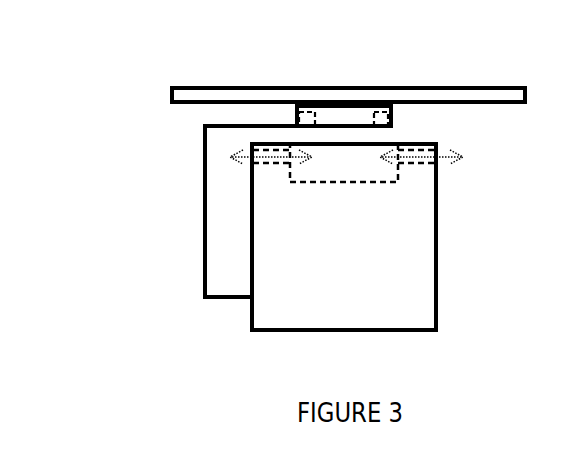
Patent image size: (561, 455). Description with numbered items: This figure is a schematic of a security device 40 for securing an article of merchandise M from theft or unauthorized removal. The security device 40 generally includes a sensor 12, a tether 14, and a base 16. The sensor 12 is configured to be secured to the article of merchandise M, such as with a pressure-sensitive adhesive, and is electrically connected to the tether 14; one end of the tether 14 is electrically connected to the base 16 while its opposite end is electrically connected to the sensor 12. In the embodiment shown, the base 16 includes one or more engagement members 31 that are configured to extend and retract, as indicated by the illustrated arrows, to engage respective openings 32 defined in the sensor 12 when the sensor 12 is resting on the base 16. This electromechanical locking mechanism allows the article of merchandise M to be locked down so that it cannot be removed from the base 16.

The security device 40 is at (136, 116).
The article of merchandise M is at (445, 88).
The sensor 12 is at (393, 127).
The tether 14 is at (205, 207).
The base 16 is at (440, 262).
The engagement members 31 is at (273, 150).
The openings 32 is at (312, 115).